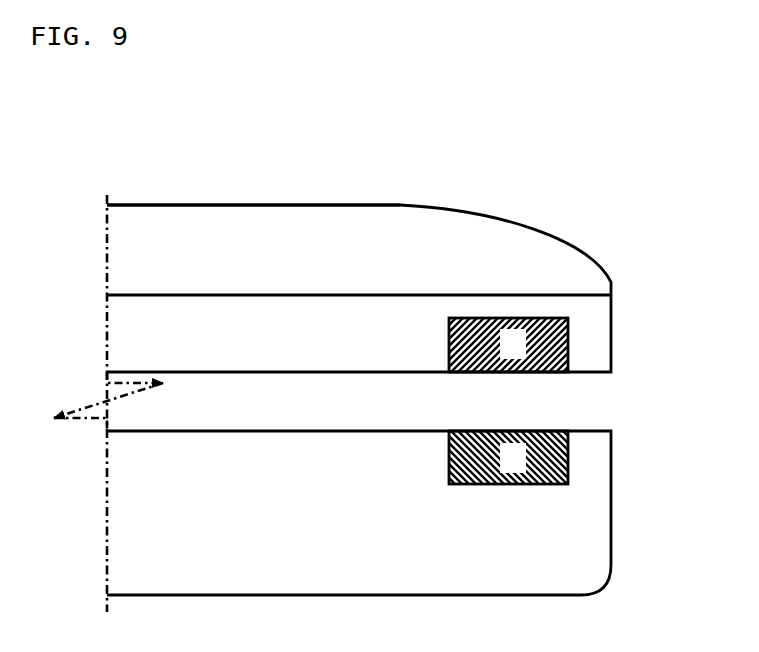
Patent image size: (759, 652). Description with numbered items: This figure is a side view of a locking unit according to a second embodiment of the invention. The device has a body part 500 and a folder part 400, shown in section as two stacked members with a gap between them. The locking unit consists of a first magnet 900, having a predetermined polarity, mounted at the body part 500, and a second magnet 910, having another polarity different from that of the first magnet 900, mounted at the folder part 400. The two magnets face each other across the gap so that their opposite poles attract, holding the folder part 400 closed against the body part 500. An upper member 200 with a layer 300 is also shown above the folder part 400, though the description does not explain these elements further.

The upper housing / cover 200 is at (522, 208).
The upper layer 300 is at (337, 230).
The folder part 400 is at (588, 309).
The body part 500 is at (622, 525).
The first magnet 900 is at (568, 350).
The second magnet 910 is at (568, 452).